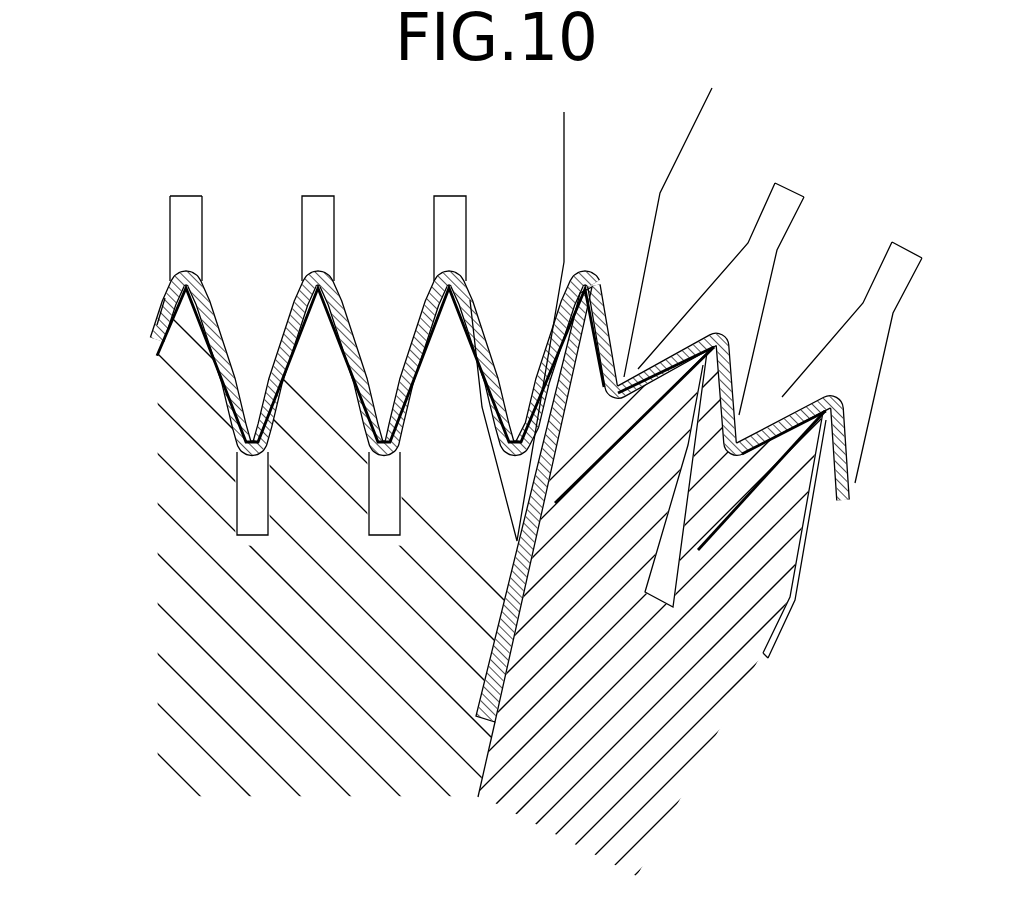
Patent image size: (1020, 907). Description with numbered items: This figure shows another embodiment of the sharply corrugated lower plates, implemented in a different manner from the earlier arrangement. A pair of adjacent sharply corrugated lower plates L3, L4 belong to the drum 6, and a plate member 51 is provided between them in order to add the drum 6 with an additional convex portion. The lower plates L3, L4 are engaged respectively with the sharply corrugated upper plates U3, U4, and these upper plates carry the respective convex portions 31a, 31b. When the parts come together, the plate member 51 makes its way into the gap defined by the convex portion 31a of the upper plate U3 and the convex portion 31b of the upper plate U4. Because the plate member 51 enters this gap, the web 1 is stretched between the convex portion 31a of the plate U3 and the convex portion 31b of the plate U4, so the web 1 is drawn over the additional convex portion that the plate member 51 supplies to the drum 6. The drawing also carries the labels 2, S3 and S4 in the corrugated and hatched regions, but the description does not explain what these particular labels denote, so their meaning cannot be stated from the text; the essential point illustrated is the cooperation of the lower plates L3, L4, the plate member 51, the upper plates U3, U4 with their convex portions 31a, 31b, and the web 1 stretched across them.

The web 1 is at (845, 453).
The fin 2 is at (124, 498).
The drum 6 is at (128, 695).
The convex portion 31a is at (640, 328).
The convex portion 31b is at (498, 385).
The plate member 51 is at (535, 518).
The sharply corrugated upper plate U3 is at (672, 222).
The sharply corrugated upper plate U4 is at (552, 153).
The sharply corrugated lower plate L3 is at (685, 748).
The sharply corrugated lower plate L4 is at (200, 640).
The section S3 is at (572, 803).
The section S4 is at (278, 757).